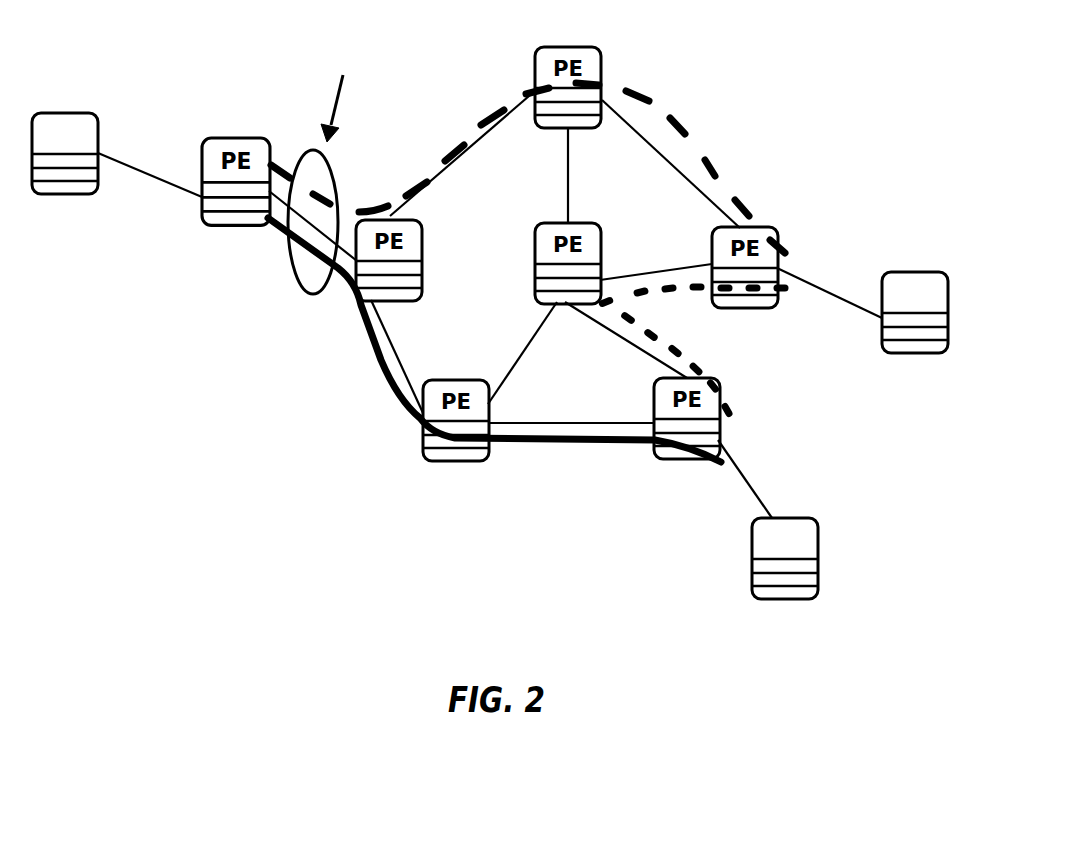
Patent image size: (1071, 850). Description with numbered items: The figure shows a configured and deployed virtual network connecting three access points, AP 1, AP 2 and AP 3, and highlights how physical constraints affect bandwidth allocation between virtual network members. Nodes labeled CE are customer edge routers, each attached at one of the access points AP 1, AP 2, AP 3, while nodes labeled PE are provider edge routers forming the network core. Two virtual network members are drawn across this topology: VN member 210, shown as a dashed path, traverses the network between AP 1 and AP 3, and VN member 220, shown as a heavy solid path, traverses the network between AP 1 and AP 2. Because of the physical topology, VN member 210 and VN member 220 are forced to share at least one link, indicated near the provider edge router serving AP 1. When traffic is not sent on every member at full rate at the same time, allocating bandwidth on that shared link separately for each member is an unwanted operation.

The VN member 210 is at (710, 158).
The VN member 220 is at (378, 373).
The access point AP1 1 is at (117, 155).
The access point AP2 2 is at (774, 519).
The access point AP3 3 is at (862, 292).